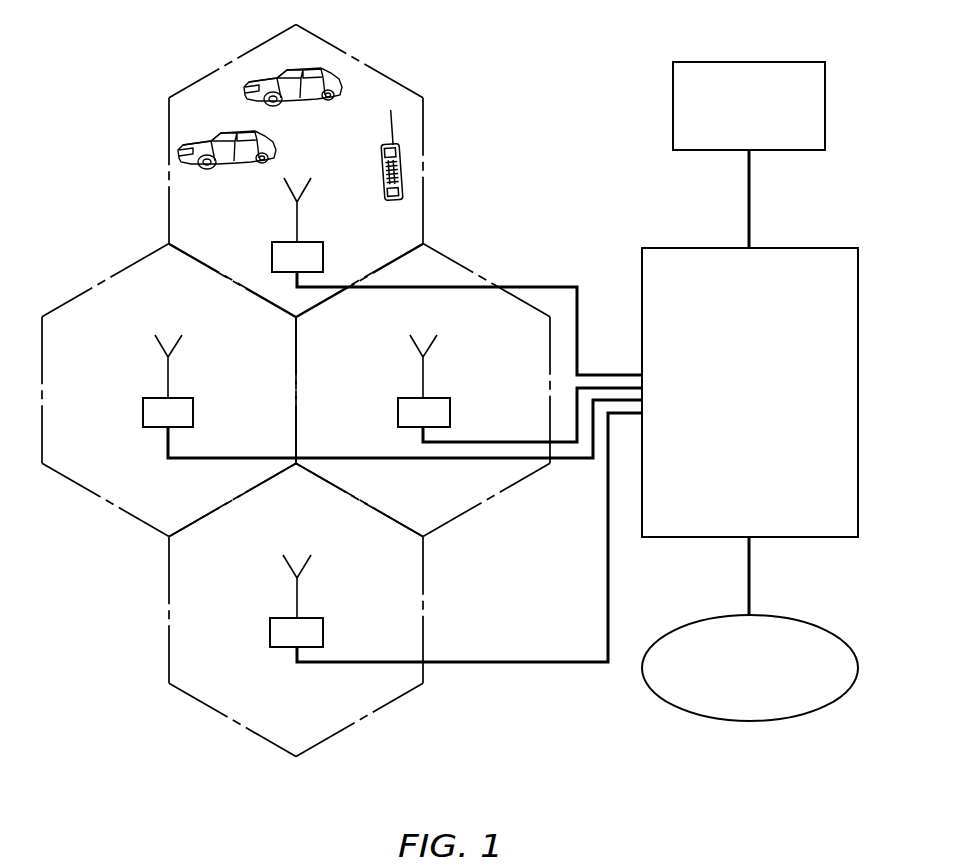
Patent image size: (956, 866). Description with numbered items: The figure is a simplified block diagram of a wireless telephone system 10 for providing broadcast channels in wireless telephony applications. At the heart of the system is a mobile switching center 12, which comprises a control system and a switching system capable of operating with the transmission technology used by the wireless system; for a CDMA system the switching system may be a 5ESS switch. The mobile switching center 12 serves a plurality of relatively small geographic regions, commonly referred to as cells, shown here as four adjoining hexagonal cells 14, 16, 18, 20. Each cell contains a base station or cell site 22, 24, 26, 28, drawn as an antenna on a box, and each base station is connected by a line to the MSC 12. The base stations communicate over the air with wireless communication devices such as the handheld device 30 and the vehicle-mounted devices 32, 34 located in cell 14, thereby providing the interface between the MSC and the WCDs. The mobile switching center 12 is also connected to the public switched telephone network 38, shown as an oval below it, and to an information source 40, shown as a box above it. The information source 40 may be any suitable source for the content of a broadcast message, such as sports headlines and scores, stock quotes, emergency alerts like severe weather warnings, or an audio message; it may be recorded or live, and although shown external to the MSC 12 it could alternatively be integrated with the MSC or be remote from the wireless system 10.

The wireless telephone system 10 is at (534, 48).
The mobile switching center 12 is at (825, 248).
The cell 14 is at (391, 77).
The cell 16 is at (517, 482).
The cell 18 is at (77, 484).
The cell 20 is at (205, 704).
The base station 22 is at (306, 242).
The base station 24 is at (436, 398).
The base station 26 is at (180, 398).
The base station 28 is at (308, 618).
The wireless communication device 30 is at (382, 171).
The wireless communication device 32 is at (310, 97).
The wireless communication device 34 is at (235, 128).
The public switched telephone network 38 is at (826, 631).
The information source 40 is at (781, 62).